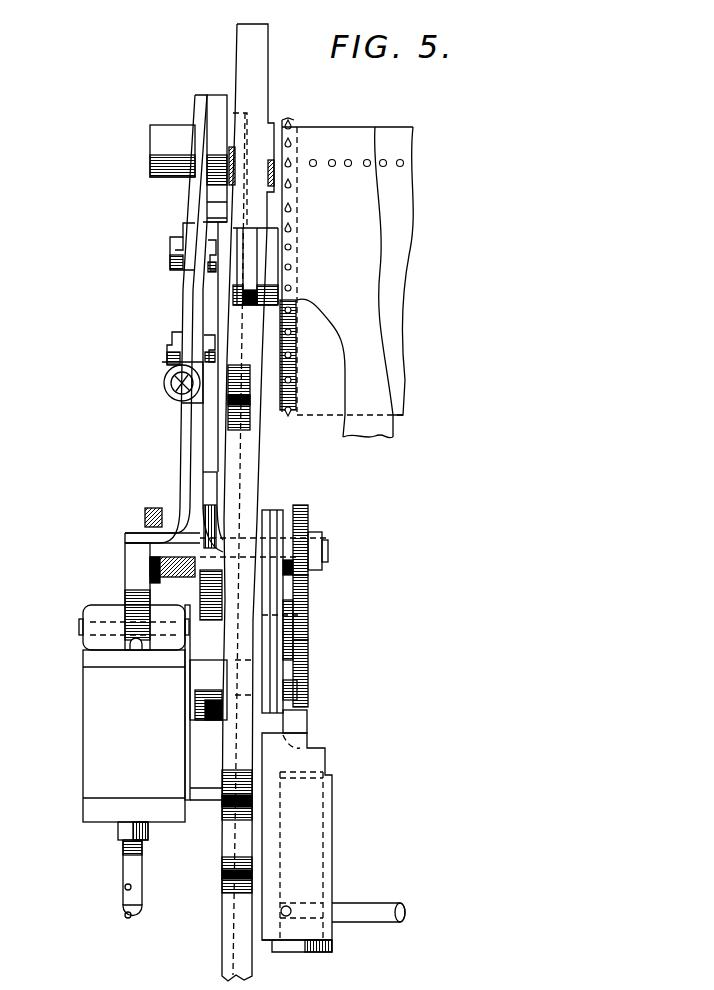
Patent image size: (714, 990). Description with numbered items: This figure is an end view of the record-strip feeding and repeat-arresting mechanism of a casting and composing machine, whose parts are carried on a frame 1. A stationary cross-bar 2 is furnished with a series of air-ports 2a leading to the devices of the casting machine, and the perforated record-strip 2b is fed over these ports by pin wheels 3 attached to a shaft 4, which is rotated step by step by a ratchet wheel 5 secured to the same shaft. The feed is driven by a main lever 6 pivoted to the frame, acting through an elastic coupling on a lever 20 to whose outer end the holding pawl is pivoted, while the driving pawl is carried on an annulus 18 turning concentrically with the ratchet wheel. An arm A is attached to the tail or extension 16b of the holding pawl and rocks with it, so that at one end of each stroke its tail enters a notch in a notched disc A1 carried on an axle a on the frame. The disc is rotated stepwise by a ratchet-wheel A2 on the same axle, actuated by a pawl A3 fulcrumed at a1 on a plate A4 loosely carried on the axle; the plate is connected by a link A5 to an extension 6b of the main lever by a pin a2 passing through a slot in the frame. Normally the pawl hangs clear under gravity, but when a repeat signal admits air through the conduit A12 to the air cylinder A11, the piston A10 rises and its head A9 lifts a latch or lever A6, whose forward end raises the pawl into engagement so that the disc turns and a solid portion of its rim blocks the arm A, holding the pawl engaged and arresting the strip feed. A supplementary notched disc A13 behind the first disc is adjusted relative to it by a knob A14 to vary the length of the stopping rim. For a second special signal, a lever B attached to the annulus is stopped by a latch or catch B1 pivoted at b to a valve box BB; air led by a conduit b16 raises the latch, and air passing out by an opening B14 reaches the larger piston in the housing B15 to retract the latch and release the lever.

The frame 1 is at (248, 47).
The stationary cross-bar 2 is at (405, 245).
The air-ports 2a is at (384, 163).
The record-strip 2b is at (395, 427).
The pin wheels 3 is at (290, 412).
The shaft 4 is at (250, 262).
The ratchet wheel 5 is at (213, 194).
The lever 6 is at (218, 640).
The extension of the main operating lever 6b is at (210, 700).
The tail or extension of the holding pawl 16b is at (197, 285).
The annulus 18 is at (228, 403).
The lever 20 is at (215, 105).
The arm A is at (180, 452).
The notched disc A1 is at (228, 500).
The ratchet-wheel A2 is at (308, 515).
The pawl A3 is at (303, 603).
The frame or plate A4 is at (283, 512).
The link A5 is at (297, 697).
The latch or lever A6 is at (300, 665).
The head A9 is at (300, 725).
The piston A10 is at (332, 775).
The air cylinder A11 is at (323, 822).
The conduit A12 is at (385, 888).
The supplementary notched disc A13 is at (222, 602).
The knob A14 is at (152, 518).
The lever B is at (223, 308).
The latch or catch B1 is at (125, 572).
The opening B14 is at (128, 904).
The box or housing B15 is at (98, 705).
The valve box BB is at (134, 783).
The axle a is at (330, 552).
The fulcrum of pawl A3 a1 is at (300, 615).
The pin a2 is at (200, 687).
The pivot of latch B1 b is at (80, 626).
The conduit b16 is at (125, 863).